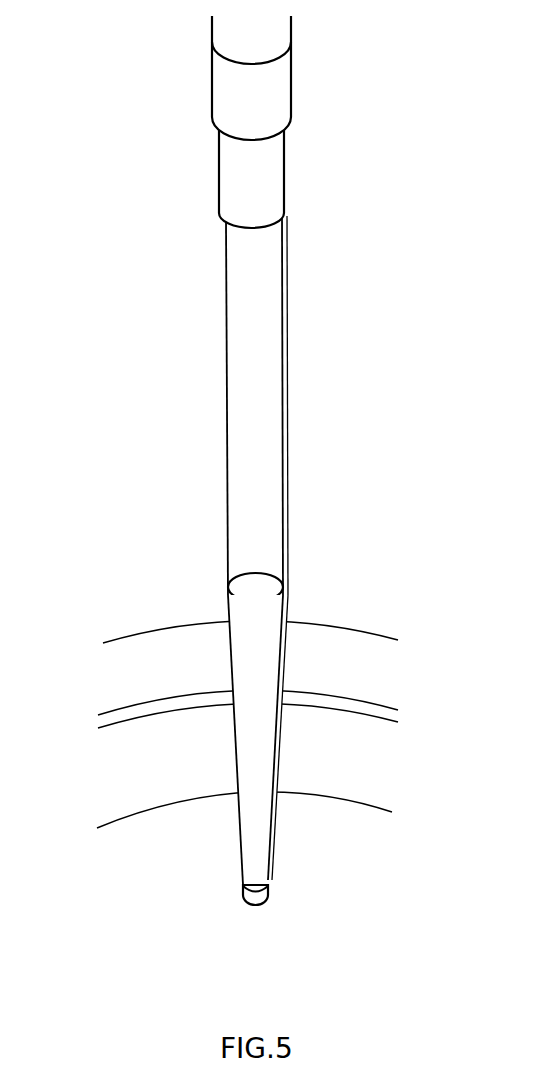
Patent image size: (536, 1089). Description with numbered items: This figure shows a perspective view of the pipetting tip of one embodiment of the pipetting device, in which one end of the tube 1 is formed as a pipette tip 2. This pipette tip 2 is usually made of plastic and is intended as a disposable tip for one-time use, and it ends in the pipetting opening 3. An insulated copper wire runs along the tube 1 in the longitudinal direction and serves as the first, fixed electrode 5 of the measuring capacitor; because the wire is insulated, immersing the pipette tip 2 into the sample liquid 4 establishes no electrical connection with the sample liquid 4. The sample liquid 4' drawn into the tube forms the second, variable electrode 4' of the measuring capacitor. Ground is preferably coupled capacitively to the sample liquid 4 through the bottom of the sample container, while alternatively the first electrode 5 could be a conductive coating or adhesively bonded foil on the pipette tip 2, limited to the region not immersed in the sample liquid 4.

The tube 1 is at (252, 391).
The pipette tip 2 is at (228, 733).
The pipetting opening 3 is at (258, 907).
The sample liquid 4 is at (261, 828).
The second electrode 4' is at (164, 739).
The first electrode 5 is at (280, 755).